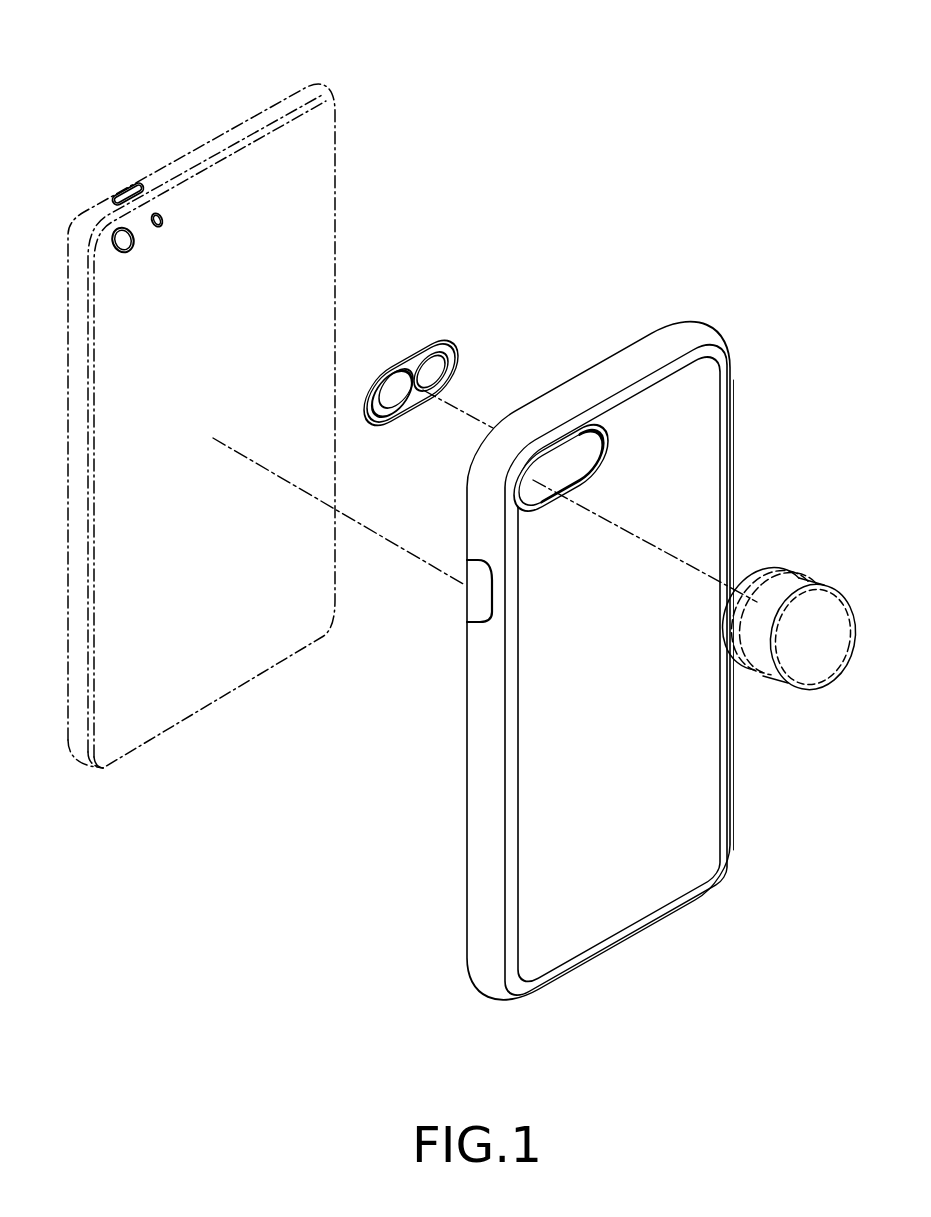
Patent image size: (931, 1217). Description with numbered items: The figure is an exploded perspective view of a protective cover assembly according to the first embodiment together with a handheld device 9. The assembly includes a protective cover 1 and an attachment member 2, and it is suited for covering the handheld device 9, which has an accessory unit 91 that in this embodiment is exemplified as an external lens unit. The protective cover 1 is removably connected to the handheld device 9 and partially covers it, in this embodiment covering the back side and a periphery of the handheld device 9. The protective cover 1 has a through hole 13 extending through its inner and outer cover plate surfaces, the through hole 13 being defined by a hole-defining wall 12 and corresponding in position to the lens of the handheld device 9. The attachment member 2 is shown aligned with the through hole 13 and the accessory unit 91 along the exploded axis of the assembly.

The protective cover 1 is at (685, 298).
The attachment member 2 is at (417, 318).
The handheld device 9 is at (231, 92).
The hole-defining wall 12 is at (608, 440).
The through hole 13 is at (570, 447).
The accessory unit 91 is at (810, 657).